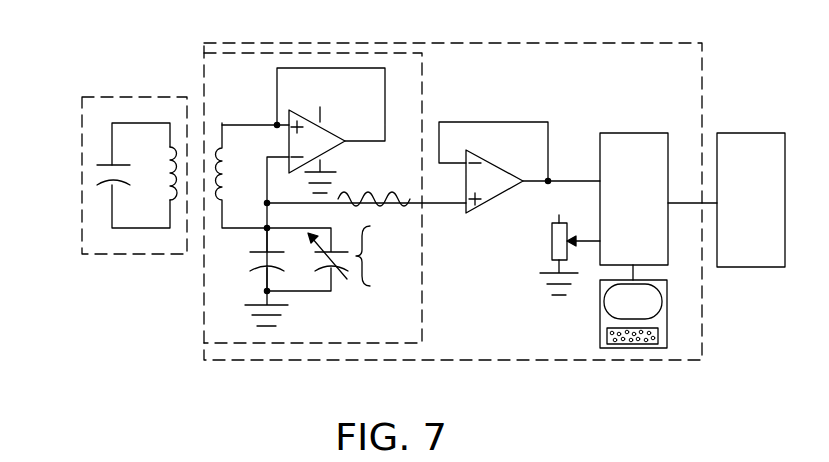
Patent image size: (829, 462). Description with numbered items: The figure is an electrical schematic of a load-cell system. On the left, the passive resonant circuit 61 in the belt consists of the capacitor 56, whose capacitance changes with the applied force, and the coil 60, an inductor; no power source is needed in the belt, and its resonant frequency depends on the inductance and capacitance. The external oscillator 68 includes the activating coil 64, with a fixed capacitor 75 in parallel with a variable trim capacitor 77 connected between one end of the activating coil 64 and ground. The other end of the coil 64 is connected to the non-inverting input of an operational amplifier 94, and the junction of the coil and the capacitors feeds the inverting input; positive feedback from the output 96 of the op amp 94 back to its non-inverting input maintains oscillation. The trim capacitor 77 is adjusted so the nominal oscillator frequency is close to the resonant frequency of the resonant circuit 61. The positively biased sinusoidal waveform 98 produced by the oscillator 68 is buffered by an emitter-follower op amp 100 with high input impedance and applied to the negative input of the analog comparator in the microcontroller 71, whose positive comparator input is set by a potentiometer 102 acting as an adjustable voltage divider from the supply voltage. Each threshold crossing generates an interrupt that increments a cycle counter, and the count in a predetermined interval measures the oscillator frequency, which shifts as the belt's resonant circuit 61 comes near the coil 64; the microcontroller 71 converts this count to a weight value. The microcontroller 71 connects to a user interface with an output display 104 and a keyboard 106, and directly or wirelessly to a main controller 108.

The capacitor 56 is at (108, 184).
The coil 60 is at (167, 186).
The passive resonant circuit 61 is at (138, 92).
The activating coil 64 is at (222, 150).
The external oscillator 68 is at (432, 42).
The microcontroller 71 is at (630, 133).
The capacitor 75 is at (265, 267).
The trim capacitor 77 is at (335, 272).
The operational amplifier 94 is at (325, 130).
The output 96 is at (350, 148).
The positively biased sinusoidal waveform 98 is at (408, 194).
The emitter-follower op amp 100 is at (490, 175).
The potentiometer 102 is at (551, 248).
The output display 104 is at (662, 300).
The keyboard 106 is at (655, 346).
The main controller 108 is at (738, 133).